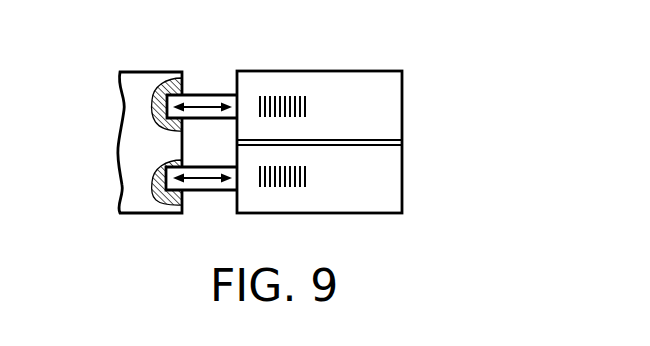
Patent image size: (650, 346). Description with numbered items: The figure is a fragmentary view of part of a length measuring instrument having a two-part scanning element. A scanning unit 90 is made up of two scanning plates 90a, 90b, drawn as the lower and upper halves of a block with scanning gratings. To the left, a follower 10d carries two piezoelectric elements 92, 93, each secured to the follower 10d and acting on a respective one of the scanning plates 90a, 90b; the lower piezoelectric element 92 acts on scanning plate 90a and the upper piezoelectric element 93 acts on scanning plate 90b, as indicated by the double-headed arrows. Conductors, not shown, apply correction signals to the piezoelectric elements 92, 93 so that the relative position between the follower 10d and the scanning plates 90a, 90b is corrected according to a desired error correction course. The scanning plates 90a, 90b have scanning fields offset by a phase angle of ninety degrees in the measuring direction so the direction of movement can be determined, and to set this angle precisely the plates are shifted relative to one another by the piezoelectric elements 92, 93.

The follower 10d is at (133, 127).
The piezoelectric element 93 is at (205, 100).
The piezoelectric element 92 is at (206, 186).
The scanning unit 90 is at (416, 142).
The scanning plate 90b is at (385, 113).
The scanning plate 90a is at (386, 186).